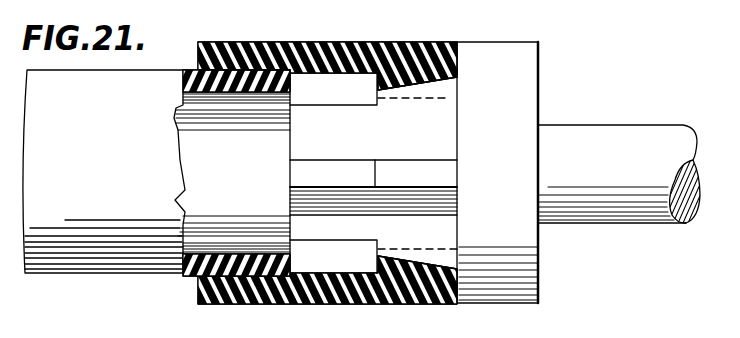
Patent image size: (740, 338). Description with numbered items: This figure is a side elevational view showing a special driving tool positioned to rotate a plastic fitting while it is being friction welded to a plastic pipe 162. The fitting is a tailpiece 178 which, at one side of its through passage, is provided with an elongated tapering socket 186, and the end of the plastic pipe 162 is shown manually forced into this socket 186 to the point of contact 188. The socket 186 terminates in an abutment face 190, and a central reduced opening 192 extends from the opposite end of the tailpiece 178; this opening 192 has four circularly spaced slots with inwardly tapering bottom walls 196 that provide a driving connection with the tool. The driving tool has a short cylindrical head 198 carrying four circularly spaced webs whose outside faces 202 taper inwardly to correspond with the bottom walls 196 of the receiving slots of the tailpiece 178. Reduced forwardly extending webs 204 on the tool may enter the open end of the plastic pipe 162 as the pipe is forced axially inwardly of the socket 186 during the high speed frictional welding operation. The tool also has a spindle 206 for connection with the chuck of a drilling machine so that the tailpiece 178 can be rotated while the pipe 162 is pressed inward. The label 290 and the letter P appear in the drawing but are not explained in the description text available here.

The plastic pipe 162 is at (147, 262).
The tailpiece 178 is at (363, 52).
The elongated tapering socket 186 is at (294, 69).
The point of contact 188 is at (282, 284).
The abutment face 190 is at (384, 88).
The central reduced opening 192 is at (445, 99).
The inwardly tapering bottom walls 196 is at (459, 42).
The short cylindrical head 198 is at (527, 270).
The outside faces 202 is at (414, 88).
The reduced forwardly extending webs 204 is at (341, 139).
The spindle 206 is at (651, 135).
The ramp surface 290 is at (438, 88).
The press point P is at (266, 42).